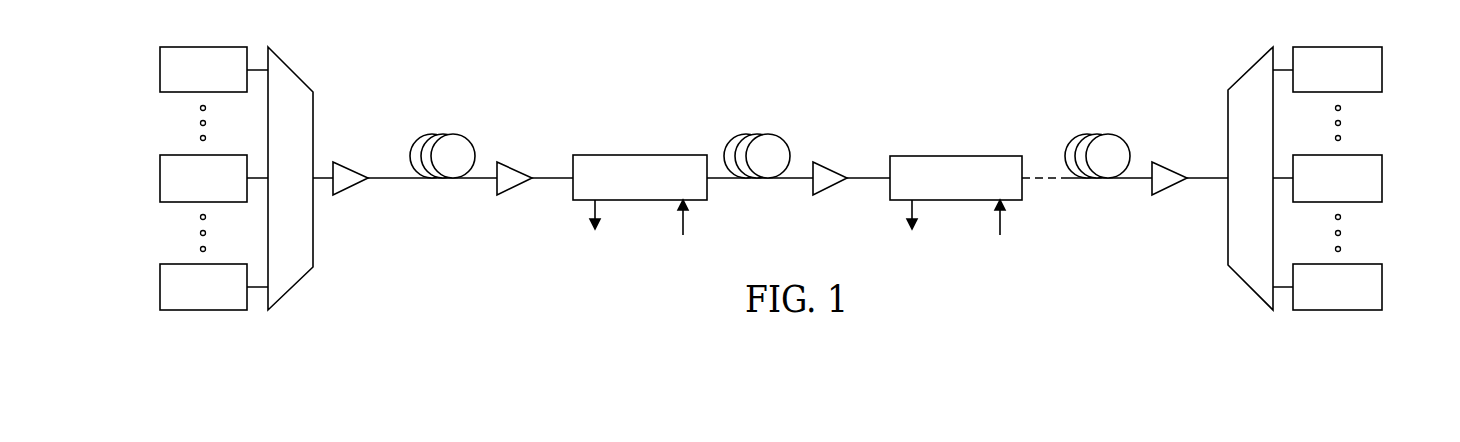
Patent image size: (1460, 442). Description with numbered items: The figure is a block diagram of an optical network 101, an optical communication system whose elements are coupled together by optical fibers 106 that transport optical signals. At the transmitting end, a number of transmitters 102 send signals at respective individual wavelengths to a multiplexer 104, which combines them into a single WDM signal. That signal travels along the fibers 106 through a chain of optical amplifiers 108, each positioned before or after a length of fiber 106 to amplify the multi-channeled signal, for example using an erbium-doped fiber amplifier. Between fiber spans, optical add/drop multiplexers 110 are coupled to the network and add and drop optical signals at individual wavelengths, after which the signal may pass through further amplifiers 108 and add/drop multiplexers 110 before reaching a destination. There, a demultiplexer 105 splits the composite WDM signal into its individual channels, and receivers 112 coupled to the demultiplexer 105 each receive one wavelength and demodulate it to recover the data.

The optical network 101 is at (566, 46).
The transmitters 102 is at (160, 59).
The multiplexer 104 is at (321, 60).
The demultiplexer 105 is at (1250, 69).
The optical fibers 106 is at (443, 135).
The optical amplifiers 108 is at (353, 168).
The optical add/drop multiplexers 110 is at (640, 155).
The receivers 112 is at (1382, 57).